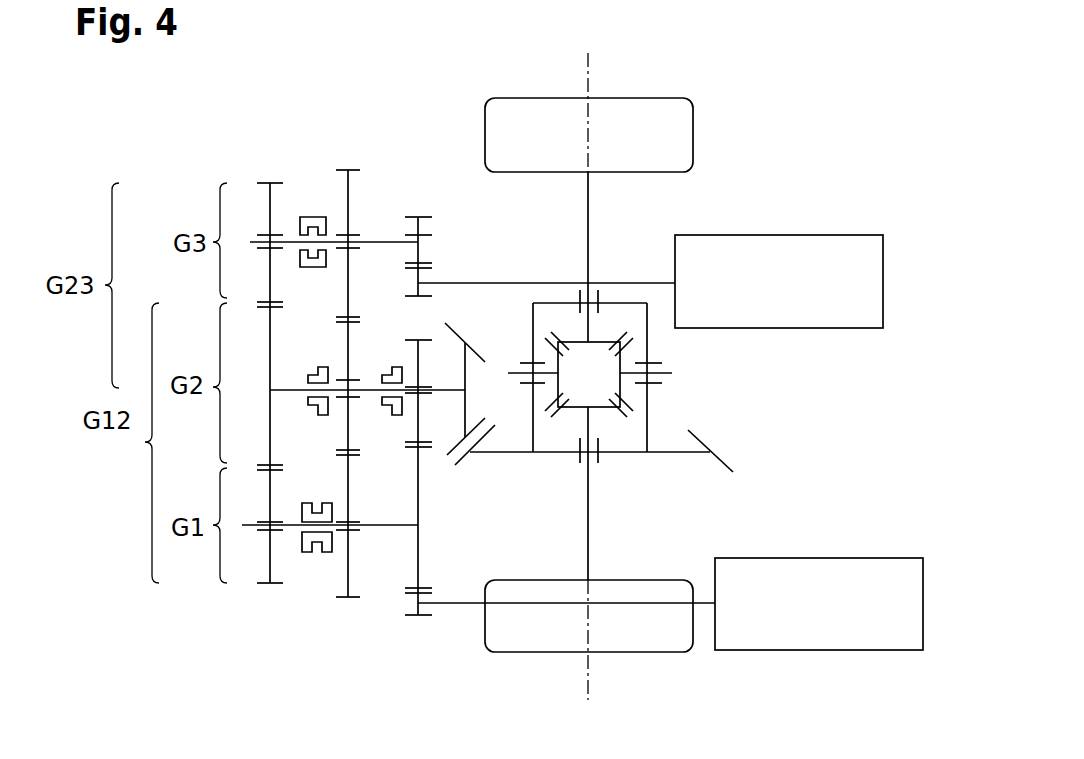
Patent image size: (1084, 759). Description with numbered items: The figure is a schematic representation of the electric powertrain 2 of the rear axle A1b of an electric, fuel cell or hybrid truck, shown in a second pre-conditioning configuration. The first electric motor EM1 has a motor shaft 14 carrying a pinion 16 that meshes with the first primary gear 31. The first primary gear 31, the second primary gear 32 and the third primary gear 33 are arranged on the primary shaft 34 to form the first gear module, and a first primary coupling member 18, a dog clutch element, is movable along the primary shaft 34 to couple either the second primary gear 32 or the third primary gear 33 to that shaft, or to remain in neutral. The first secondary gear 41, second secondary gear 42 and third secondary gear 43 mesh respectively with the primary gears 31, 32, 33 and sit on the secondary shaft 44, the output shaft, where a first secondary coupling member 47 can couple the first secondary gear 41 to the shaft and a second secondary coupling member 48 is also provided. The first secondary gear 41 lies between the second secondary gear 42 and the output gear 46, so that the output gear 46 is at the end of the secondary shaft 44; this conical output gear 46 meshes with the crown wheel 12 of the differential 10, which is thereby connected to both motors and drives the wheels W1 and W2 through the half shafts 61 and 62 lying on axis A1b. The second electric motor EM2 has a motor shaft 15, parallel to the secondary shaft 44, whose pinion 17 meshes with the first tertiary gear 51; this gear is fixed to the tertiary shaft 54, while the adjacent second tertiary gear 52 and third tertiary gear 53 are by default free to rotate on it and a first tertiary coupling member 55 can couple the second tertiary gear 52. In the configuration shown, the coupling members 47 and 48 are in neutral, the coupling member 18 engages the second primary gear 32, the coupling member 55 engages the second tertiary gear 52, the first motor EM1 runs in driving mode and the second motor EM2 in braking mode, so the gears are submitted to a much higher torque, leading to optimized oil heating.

The electric powertrain 2 is at (892, 425).
The differential 10 is at (684, 357).
The crown wheel 12 is at (676, 452).
The motor shaft 14 is at (453, 602).
The motor shaft 15 is at (495, 281).
The pinion 16 is at (412, 605).
The pinion 17 is at (420, 273).
The first primary coupling member 18 is at (310, 548).
The first primary gear 31 is at (420, 556).
The second primary gear 32 is at (349, 478).
The third primary gear 33 is at (270, 480).
The primary shaft 34 is at (372, 530).
The first secondary gear 41 is at (419, 370).
The second secondary gear 42 is at (348, 353).
The third secondary gear 43 is at (270, 347).
The secondary shaft 44 is at (288, 387).
The output gear 46 is at (466, 380).
The first secondary coupling member 47 is at (388, 412).
The second secondary coupling member 48 is at (308, 404).
The first tertiary gear 51 is at (419, 229).
The second tertiary gear 52 is at (349, 199).
The third tertiary gear 53 is at (270, 212).
The tertiary shaft 54 is at (390, 241).
The first tertiary coupling member 55 is at (304, 216).
The first half shaft 61 is at (588, 527).
The second half shaft 62 is at (588, 232).
The first wheel W1 is at (627, 652).
The second wheel W2 is at (648, 137).
The first electric motor EM1 is at (819, 604).
The second electric motor EM2 is at (779, 281).
The rear axle A1b is at (616, 375).